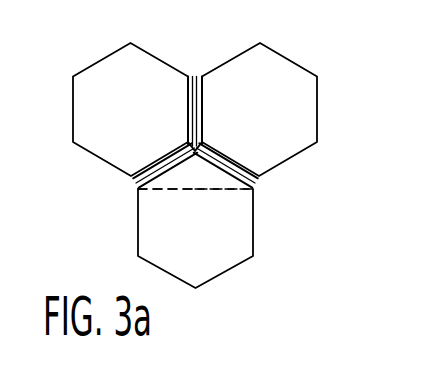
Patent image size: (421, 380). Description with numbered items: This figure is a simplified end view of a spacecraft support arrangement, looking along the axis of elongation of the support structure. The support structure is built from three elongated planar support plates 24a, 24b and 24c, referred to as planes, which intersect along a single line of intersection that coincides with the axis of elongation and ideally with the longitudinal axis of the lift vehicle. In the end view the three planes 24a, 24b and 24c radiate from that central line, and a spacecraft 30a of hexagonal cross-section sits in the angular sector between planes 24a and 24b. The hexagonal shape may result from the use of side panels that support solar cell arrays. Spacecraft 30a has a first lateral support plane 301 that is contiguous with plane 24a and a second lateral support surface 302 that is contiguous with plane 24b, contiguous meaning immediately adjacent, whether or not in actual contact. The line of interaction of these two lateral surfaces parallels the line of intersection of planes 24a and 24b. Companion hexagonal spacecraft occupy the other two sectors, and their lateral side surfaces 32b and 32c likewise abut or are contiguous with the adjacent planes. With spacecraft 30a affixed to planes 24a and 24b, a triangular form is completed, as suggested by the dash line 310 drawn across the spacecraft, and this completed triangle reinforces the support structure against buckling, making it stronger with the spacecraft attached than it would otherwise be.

The elongated planar support plate 24a is at (257, 182).
The elongated planar support plate 24b is at (134, 184).
The elongated planar support plate 24c is at (191, 77).
The spacecraft 30a is at (138, 232).
The first lateral support plane 301 is at (226, 174).
The second lateral support surface 302 is at (155, 179).
The dash line 310 is at (235, 190).
The lateral side surface 32b is at (73, 128).
The lateral side surface 32c is at (300, 71).